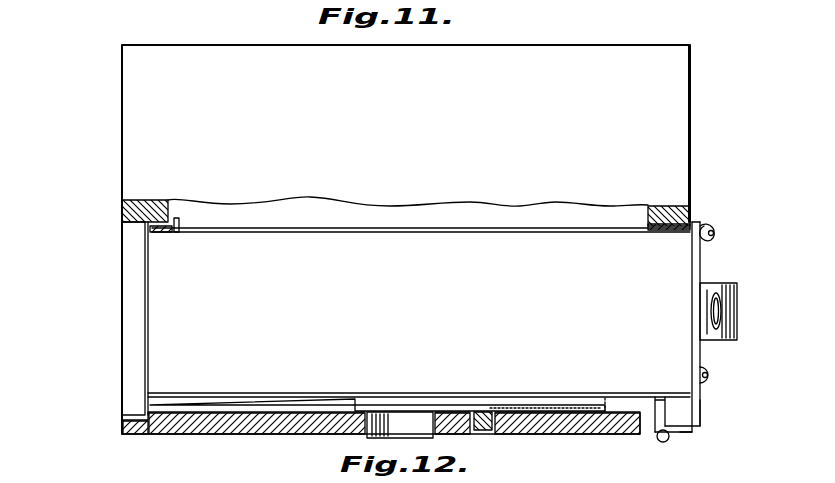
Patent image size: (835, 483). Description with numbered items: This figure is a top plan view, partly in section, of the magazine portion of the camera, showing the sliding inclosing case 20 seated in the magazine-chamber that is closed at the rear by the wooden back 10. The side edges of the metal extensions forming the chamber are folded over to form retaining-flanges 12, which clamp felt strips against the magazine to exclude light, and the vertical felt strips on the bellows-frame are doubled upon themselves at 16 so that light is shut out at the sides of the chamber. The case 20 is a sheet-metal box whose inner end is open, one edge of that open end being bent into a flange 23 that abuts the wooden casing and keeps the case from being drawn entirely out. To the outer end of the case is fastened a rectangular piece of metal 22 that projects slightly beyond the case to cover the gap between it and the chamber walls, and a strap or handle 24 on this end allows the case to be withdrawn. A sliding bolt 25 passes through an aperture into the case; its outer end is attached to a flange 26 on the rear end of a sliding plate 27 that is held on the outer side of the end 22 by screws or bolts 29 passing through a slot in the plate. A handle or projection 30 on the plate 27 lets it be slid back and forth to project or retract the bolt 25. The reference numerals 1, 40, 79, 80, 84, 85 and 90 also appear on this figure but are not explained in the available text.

The window opening 1 is at (406, 239).
The back 10 is at (290, 432).
The retaining-flanges 12 is at (118, 320).
The folded portion of felt strip 16 is at (676, 233).
The sliding inclosing case 20 is at (419, 346).
The rectangular piece of metal 22 is at (700, 345).
The flange 23 is at (181, 222).
The strap or handle 24 is at (775, 258).
The sliding bolt 25 is at (683, 398).
The flange 26 is at (696, 434).
The sliding plate 27 is at (702, 405).
The screws or bolts 29 is at (710, 375).
The handle or projection 30 is at (719, 230).
The inner wall 40 is at (128, 277).
The box 79 is at (400, 425).
The thin plate 80 is at (512, 405).
The block 84 is at (484, 430).
The wedge 85 is at (612, 420).
The roller 90 is at (664, 443).